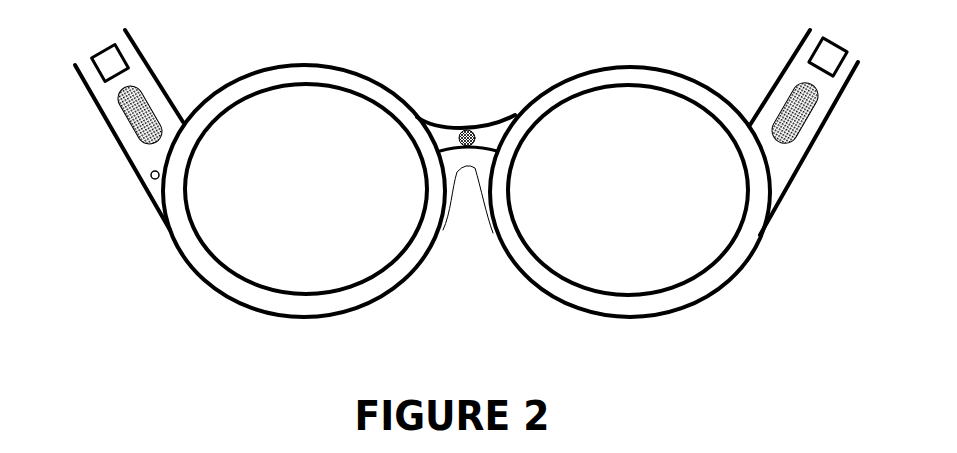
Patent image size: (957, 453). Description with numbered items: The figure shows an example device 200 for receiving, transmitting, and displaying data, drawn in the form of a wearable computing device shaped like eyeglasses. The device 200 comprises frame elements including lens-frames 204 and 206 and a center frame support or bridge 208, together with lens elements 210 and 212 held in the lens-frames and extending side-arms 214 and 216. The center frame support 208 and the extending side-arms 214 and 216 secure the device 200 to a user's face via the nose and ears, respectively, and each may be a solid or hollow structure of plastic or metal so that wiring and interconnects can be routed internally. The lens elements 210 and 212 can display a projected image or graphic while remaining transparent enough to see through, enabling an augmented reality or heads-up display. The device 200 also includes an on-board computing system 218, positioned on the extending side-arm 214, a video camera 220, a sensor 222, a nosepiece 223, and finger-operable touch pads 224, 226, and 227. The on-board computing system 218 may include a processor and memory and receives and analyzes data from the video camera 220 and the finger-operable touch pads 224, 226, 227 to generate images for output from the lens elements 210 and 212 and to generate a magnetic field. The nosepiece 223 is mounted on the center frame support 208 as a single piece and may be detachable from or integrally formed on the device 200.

The device 200 is at (763, 284).
The lens-frame 204 is at (271, 66).
The lens-frame 206 is at (605, 67).
The center frame support 208 is at (440, 128).
The lens element 210 is at (242, 250).
The lens element 212 is at (573, 267).
The extending side-arm 214 is at (168, 92).
The extending side-arm 216 is at (776, 85).
The on-board computing system 218 is at (112, 65).
The video camera 220 is at (147, 180).
The sensor 222 is at (830, 58).
The nosepiece 223 is at (482, 173).
The finger-operable touch pad 224 is at (143, 113).
The finger-operable touch pad 226 is at (797, 120).
The finger-operable touch pad 227 is at (462, 130).